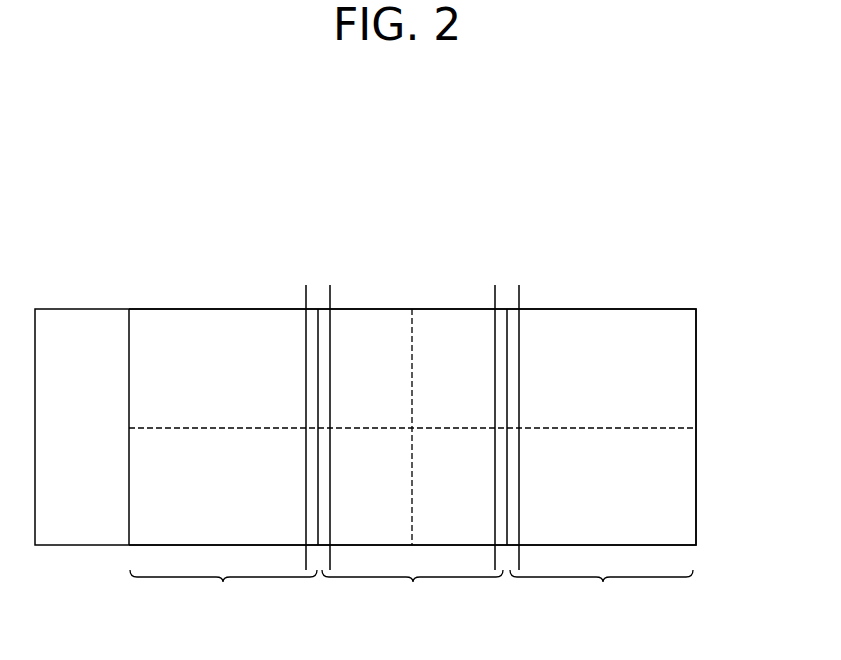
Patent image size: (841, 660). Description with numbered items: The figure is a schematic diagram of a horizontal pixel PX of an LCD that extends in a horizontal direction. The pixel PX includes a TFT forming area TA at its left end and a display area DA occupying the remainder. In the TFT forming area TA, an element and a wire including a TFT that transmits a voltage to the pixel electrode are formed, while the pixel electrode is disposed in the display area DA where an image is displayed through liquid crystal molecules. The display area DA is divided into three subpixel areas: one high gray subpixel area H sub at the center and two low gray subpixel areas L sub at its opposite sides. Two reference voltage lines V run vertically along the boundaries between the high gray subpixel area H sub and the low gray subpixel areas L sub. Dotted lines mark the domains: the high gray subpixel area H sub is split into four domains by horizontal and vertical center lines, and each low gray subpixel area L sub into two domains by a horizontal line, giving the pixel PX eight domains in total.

The pixel PX is at (662, 285).
The TFT forming area TA is at (80, 308).
The display area DA is at (697, 337).
The reference voltage line V is at (331, 297).
The low gray subpixel area L sub is at (411, 594).
The high gray subpixel area H sub is at (412, 594).